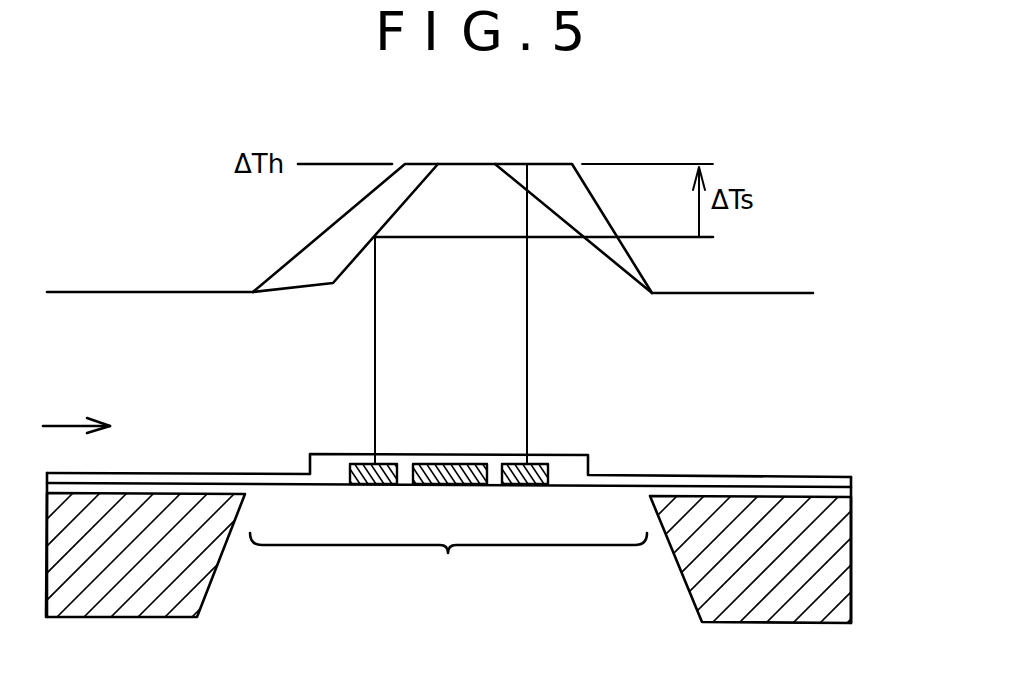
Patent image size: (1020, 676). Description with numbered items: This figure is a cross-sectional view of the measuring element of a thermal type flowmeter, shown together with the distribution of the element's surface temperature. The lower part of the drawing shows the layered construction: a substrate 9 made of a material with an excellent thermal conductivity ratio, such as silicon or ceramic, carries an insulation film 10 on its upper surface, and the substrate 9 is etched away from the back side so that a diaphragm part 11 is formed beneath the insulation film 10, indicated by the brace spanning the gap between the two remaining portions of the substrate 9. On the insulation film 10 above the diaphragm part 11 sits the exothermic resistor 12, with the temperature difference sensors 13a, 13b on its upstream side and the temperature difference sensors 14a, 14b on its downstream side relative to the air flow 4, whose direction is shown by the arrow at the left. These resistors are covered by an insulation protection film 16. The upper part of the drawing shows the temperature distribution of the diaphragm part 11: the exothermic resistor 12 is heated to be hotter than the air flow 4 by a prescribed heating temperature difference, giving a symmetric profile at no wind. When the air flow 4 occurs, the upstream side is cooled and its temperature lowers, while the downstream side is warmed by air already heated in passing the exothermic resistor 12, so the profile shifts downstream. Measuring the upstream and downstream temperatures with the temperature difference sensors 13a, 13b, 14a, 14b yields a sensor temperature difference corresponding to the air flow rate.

The air flow 4 is at (65, 425).
The substrate 9 is at (847, 540).
The insulation film 10 is at (851, 495).
The diaphragm part 11 is at (448, 565).
The exothermic resistor 12 is at (440, 462).
The temperature difference sensor 13a is at (331, 434).
The temperature difference sensor 13b is at (363, 462).
The temperature difference sensor 14a is at (569, 436).
The temperature difference sensor 14b is at (538, 462).
The insulation protection film 16 is at (851, 483).